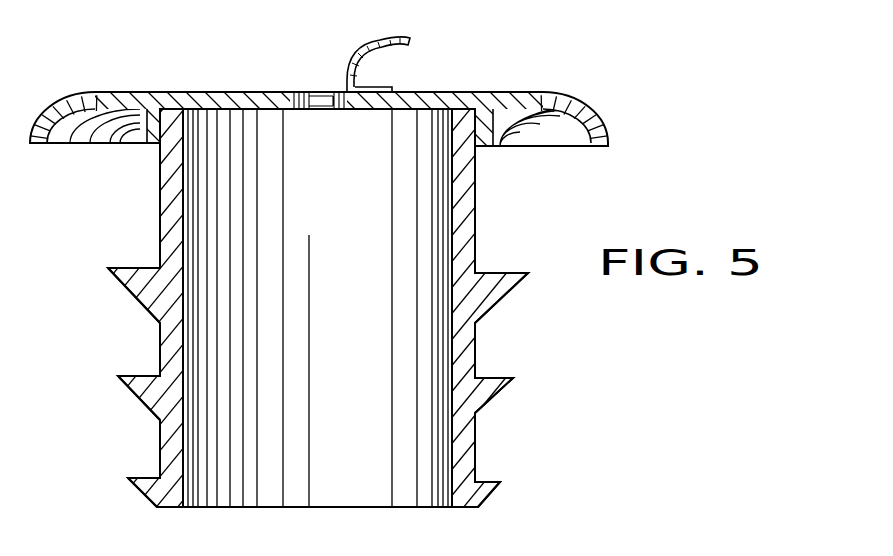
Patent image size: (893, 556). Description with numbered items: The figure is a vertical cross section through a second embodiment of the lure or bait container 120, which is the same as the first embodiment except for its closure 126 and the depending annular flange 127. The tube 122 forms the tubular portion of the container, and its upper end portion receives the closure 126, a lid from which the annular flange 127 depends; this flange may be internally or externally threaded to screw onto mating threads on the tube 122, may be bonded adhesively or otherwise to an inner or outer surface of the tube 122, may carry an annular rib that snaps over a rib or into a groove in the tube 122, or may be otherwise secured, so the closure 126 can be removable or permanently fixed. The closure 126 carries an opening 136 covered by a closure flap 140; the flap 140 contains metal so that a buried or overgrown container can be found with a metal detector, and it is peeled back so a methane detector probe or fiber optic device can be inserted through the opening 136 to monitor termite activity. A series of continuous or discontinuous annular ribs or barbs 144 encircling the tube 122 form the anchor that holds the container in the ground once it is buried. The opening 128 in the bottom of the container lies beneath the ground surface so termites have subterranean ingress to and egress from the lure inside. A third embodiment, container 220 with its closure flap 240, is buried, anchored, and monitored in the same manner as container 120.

The lure or bait container 120 is at (670, 162).
The tube 122 is at (160, 233).
The closure 126 is at (553, 92).
The depending annular flange 127 is at (507, 133).
The opening 128 is at (303, 510).
The opening 136 is at (323, 92).
The closure flap 140 is at (402, 46).
The annular ribs or barbs 144 is at (505, 300).
The closure flap 240 is at (622, 555).
The lure or bait container 220 is at (796, 555).